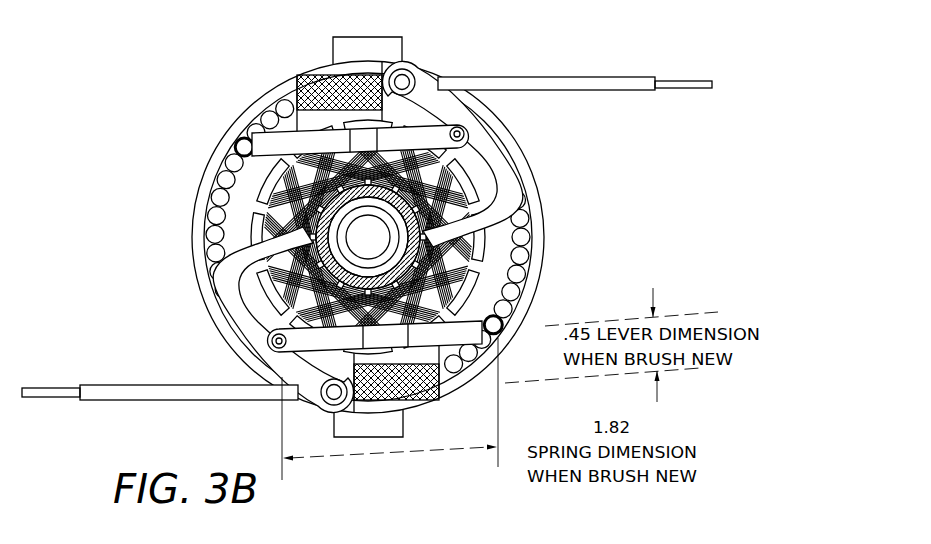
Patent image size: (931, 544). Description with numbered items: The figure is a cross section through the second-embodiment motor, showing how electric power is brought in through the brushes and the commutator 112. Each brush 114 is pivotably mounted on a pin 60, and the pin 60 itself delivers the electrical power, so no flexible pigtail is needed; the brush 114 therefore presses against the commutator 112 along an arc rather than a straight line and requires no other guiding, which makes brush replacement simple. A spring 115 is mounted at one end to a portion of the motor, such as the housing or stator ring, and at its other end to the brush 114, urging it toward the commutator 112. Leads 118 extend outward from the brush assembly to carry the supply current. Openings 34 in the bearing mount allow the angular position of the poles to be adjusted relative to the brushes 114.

The openings 34 is at (522, 237).
The pin 60 is at (405, 69).
The commutator 112 is at (275, 185).
The brush 114 is at (517, 153).
The spring 115 is at (290, 143).
The leads 118 is at (552, 83).